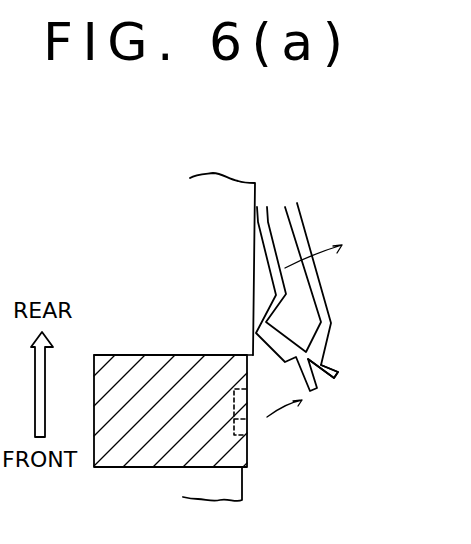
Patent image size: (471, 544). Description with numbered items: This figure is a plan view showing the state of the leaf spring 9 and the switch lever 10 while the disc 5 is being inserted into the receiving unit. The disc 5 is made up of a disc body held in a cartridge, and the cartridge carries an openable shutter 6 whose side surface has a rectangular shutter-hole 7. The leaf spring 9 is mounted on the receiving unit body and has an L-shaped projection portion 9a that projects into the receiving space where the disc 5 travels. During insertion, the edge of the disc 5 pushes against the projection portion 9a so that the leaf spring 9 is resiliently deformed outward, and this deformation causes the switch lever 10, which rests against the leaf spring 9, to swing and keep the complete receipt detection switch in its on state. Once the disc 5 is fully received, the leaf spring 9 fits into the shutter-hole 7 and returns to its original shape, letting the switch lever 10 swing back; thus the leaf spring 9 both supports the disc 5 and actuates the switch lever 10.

The disc 5 is at (207, 198).
The shutter 6 is at (243, 453).
The shutter-hole 7 is at (245, 425).
The leaf spring 9 is at (270, 238).
The projection portion 9a is at (258, 341).
The switch lever 10 is at (322, 284).